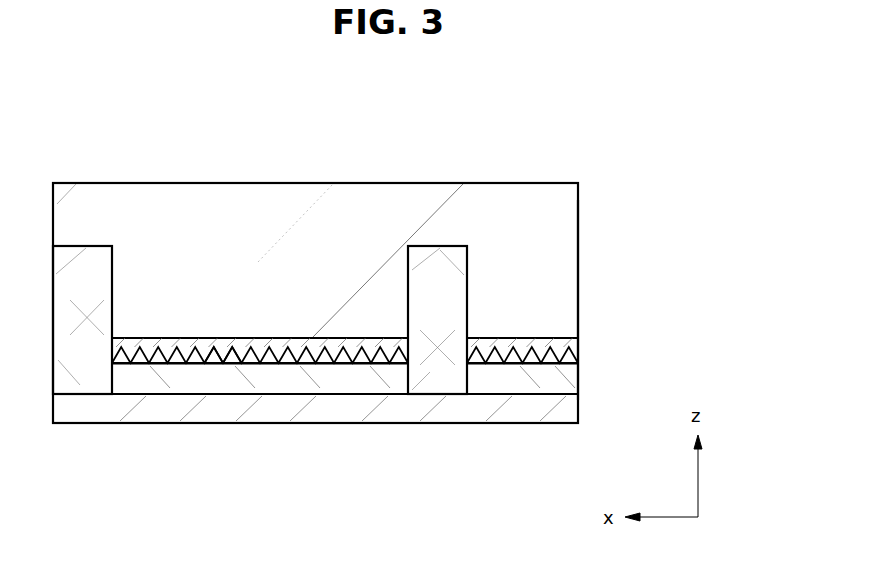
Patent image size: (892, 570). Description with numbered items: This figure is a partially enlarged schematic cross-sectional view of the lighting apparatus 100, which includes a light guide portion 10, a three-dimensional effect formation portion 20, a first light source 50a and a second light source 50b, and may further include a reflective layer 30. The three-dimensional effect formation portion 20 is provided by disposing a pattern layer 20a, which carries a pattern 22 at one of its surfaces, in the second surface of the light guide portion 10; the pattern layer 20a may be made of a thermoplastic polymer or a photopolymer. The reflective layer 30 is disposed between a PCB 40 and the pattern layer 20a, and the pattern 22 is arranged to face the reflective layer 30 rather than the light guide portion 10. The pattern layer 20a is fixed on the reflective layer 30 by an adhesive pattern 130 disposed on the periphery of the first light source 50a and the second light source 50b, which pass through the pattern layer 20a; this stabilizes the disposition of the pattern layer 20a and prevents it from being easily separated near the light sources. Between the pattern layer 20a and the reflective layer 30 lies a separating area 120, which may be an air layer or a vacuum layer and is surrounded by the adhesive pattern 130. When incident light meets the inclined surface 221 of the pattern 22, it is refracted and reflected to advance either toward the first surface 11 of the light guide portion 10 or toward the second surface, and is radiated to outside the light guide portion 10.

The lighting apparatus 100 is at (120, 165).
The light guide portion 10 is at (567, 245).
The first surface 11 is at (545, 183).
The three-dimensional effect formation portion 20 is at (201, 362).
The pattern layer 20a is at (578, 342).
The pattern 22 is at (237, 366).
The inclined surface 221 is at (216, 366).
The reflective layer 30 is at (565, 378).
The PCB 40 is at (565, 410).
The first light source 50a is at (66, 383).
The second light source 50b is at (430, 387).
The separating area 120 is at (325, 366).
The adhesive pattern 130 is at (492, 366).